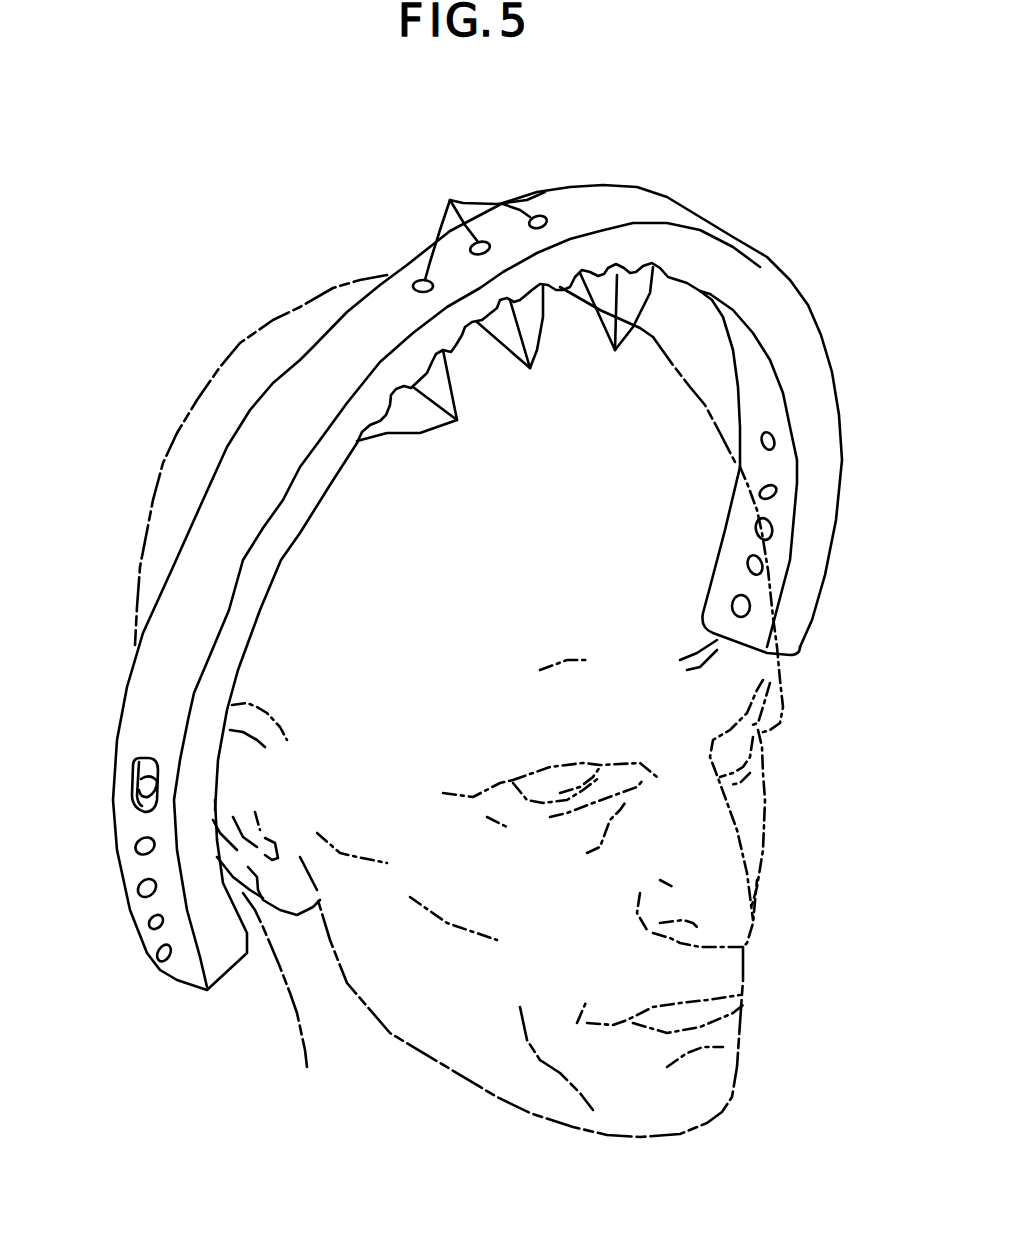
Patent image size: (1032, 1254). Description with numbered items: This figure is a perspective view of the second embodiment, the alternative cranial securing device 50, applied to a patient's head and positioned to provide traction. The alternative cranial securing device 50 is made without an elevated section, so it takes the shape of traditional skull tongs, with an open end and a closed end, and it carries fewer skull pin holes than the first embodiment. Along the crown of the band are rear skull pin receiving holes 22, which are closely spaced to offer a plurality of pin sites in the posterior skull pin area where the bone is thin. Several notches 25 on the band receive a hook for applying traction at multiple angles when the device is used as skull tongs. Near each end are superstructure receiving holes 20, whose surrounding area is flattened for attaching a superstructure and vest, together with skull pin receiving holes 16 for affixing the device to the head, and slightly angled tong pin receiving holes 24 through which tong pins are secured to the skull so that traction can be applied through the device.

The alternative cranial securing device 50 is at (727, 262).
The rear skull pin receiving holes 22 is at (480, 227).
The notches 25 is at (505, 358).
The superstructure receiving holes 20 is at (140, 782).
The skull pin receiving holes 16 is at (136, 843).
The tong pin receiving holes 24 is at (140, 886).